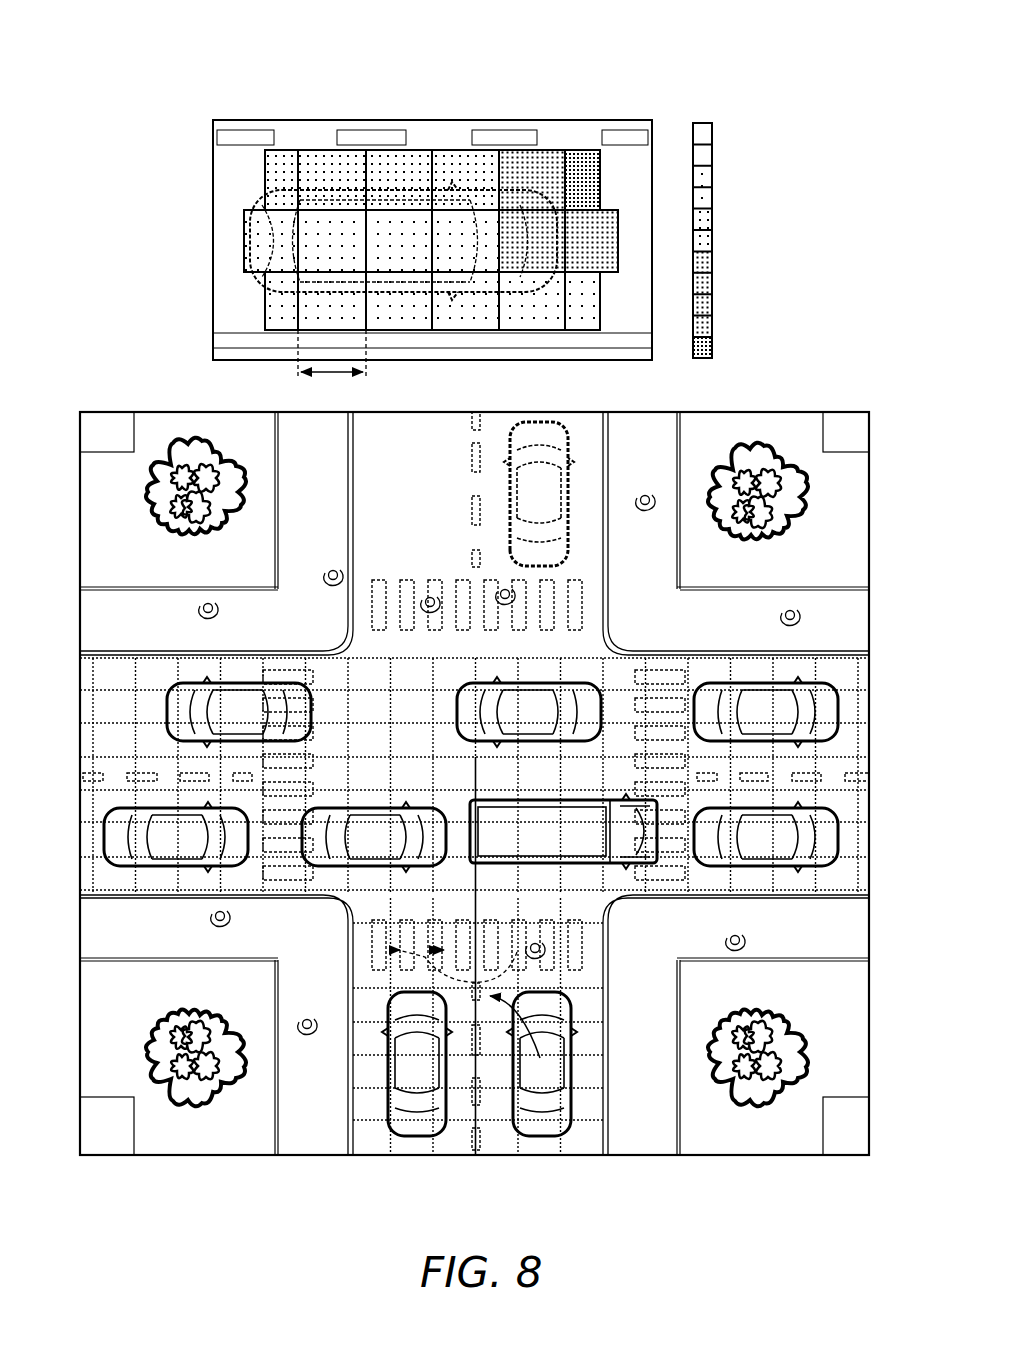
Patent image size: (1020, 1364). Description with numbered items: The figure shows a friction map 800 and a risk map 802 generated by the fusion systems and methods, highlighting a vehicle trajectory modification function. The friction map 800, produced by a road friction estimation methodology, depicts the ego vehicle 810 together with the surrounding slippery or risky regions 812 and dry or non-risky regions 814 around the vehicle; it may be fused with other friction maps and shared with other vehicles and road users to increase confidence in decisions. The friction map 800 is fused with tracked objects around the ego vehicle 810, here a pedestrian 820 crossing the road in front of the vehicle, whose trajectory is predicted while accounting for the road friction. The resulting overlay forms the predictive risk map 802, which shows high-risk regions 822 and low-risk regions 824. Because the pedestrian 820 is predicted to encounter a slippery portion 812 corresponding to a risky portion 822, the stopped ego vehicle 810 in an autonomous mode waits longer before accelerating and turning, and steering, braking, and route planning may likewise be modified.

The friction map 800 is at (780, 126).
The risk map 802 is at (444, 821).
The ego vehicle 810 is at (485, 170).
The slippery regions 812 is at (557, 165).
The dry regions 814 is at (273, 307).
The pedestrian 820 is at (540, 968).
The high-risk regions 822 is at (540, 1060).
The low-risk regions 824 is at (352, 711).